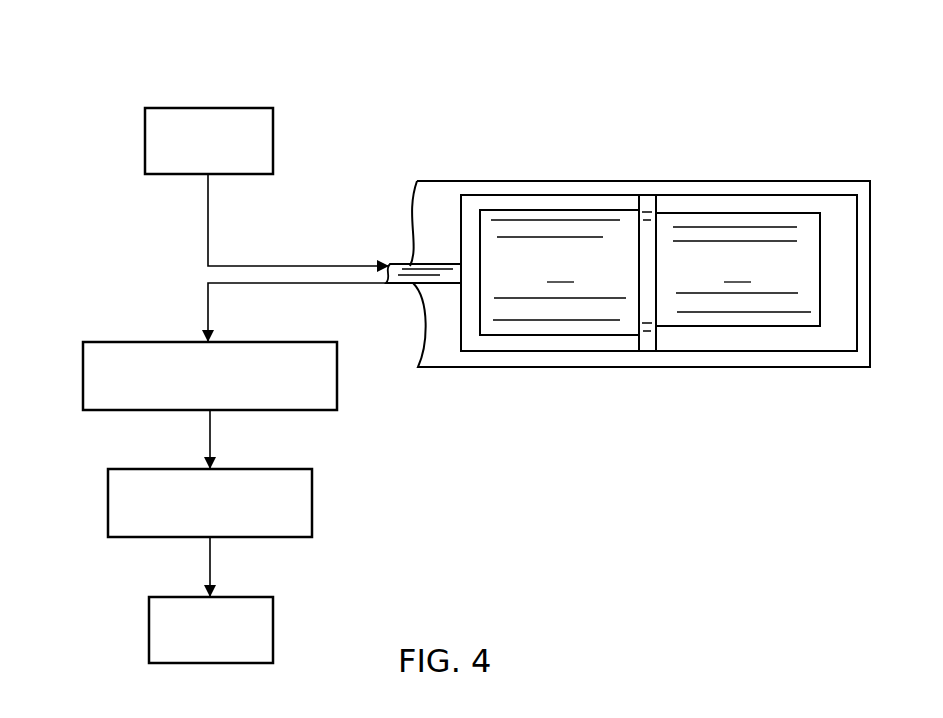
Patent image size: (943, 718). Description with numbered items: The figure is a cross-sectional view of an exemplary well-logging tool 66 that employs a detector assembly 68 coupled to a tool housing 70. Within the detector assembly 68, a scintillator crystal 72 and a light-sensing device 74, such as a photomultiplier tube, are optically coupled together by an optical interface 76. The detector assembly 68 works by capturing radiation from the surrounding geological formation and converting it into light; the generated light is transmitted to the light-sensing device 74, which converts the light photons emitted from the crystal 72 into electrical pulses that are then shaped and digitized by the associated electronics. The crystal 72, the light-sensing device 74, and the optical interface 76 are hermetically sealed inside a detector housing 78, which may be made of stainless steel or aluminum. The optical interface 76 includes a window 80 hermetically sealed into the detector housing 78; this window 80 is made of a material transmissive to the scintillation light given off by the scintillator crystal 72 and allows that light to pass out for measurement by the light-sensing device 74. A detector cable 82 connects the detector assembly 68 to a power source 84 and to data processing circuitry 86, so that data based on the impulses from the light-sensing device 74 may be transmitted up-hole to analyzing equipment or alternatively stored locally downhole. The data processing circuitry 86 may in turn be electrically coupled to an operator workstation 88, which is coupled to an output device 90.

The well-logging tool 66 is at (797, 67).
The detector assembly 68 is at (828, 185).
The tool housing 70 is at (547, 195).
The scintillator crystal 72 is at (738, 269).
The light-sensing device 74 is at (559, 272).
The optical interface 76 is at (650, 338).
The detector housing 78 is at (797, 351).
The window 80 is at (649, 203).
The detector cable 82 is at (400, 285).
The power source 84 is at (232, 108).
The data processing circuitry 86 is at (83, 374).
The operator workstation 88 is at (108, 503).
The output device 90 is at (149, 630).